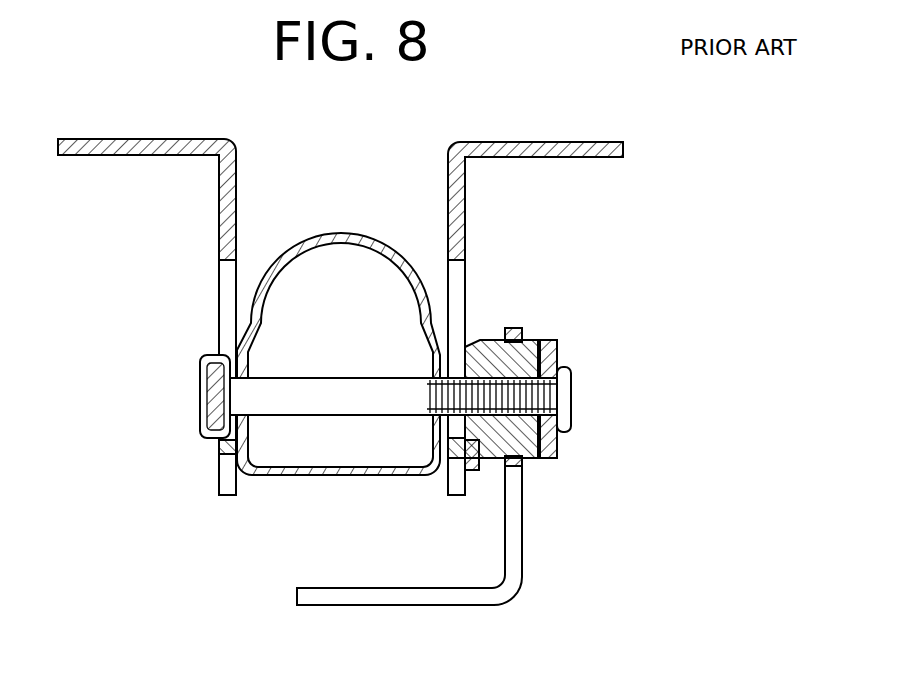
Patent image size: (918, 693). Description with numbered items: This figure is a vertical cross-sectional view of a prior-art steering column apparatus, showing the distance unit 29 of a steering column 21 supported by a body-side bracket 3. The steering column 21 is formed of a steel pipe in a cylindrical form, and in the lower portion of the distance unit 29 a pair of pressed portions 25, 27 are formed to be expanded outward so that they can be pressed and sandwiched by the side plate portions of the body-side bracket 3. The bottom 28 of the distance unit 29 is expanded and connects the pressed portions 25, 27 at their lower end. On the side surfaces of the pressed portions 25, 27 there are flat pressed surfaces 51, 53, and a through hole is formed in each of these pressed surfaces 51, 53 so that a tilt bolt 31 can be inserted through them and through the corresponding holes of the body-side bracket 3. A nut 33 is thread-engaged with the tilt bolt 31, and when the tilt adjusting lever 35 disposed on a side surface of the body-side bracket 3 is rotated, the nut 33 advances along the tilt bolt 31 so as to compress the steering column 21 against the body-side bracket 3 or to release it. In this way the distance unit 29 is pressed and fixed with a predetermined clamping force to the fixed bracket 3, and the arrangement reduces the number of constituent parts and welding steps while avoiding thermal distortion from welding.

The body-side bracket 3 is at (99, 139).
The steering column 21 is at (330, 372).
The pressed portion 25 is at (239, 480).
The pressed portion 27 is at (432, 478).
The bottom 28 is at (290, 478).
The distance unit 29 is at (336, 480).
The tilt bolt 31 is at (206, 390).
The nut 33 is at (486, 346).
The tilt adjusting lever 35 is at (451, 606).
The pressed surface 51 is at (218, 447).
The pressed surface 53 is at (468, 468).